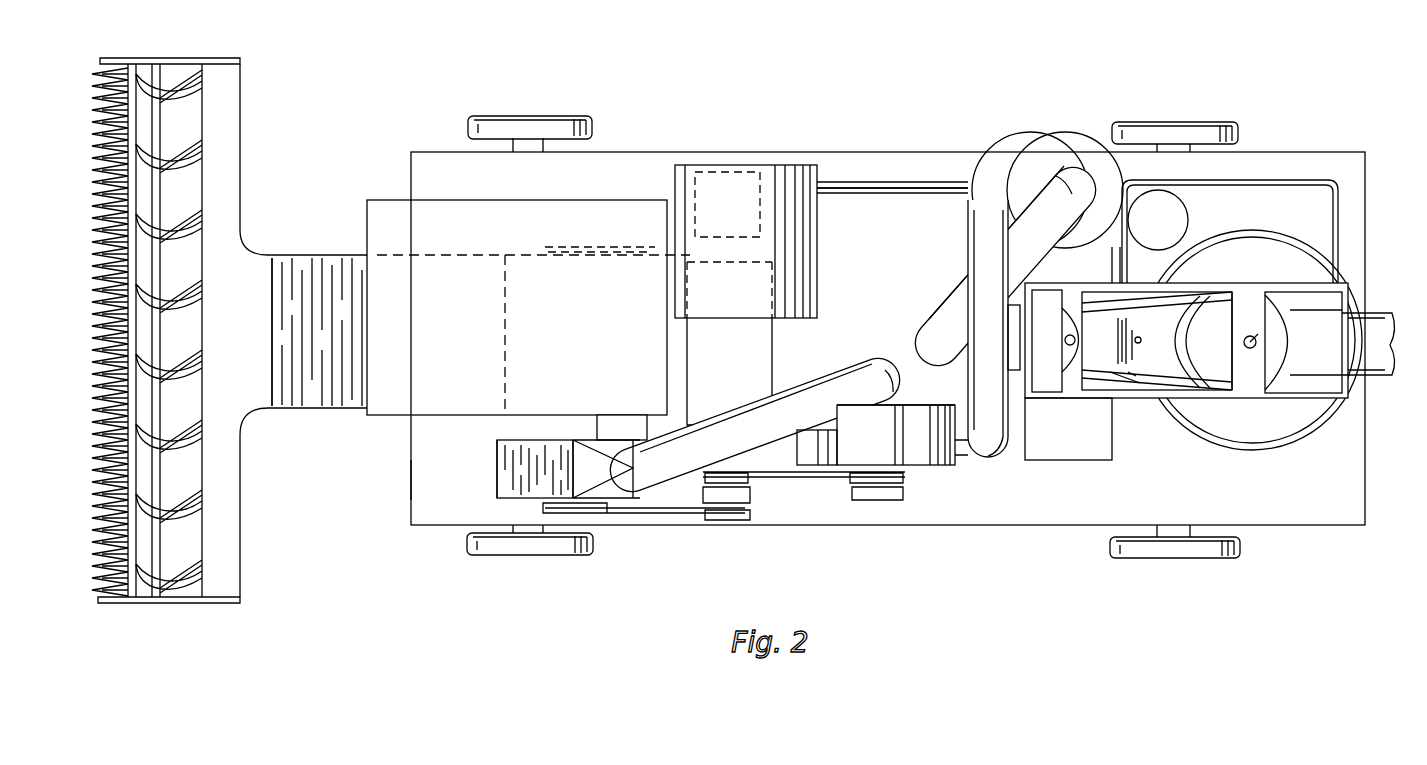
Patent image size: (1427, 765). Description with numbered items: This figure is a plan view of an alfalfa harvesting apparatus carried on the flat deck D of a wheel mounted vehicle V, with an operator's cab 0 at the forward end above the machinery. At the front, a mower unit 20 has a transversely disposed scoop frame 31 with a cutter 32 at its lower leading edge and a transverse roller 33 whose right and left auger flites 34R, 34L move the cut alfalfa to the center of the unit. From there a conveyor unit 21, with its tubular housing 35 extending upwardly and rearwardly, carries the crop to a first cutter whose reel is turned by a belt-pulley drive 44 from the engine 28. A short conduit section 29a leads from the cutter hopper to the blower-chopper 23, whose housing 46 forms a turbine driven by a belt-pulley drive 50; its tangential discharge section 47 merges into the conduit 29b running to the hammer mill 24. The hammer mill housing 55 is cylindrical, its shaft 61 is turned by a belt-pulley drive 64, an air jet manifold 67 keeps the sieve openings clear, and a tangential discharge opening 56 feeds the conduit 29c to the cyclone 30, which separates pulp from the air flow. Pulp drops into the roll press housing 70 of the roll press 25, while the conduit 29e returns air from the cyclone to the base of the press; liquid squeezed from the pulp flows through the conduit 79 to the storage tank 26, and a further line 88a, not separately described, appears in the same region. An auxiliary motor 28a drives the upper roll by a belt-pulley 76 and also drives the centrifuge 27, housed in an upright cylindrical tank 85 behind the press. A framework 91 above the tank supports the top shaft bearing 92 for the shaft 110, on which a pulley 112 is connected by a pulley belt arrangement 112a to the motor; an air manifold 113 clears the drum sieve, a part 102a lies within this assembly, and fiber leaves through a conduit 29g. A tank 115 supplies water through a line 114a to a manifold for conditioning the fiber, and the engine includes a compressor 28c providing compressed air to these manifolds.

The mower unit 20 is at (172, 64).
The conveyor unit 21 is at (330, 262).
The blower-chopper 23 is at (506, 481).
The hammer mill 24 is at (884, 476).
The roll press 25 is at (1102, 452).
The storage tank 26 is at (762, 186).
The centrifuge 27 is at (1298, 430).
The engine 28 is at (729, 343).
The auxiliary motor 28a is at (1095, 385).
The compressor 28c is at (722, 203).
The short conduit section 29a is at (624, 420).
The conduit 29b is at (762, 417).
The conduit 29c is at (996, 442).
The conduit 29e is at (975, 285).
The conduit 29g is at (1366, 318).
The cyclone 30 is at (1028, 152).
The scoop frame 31 is at (222, 518).
The cutter 32 is at (103, 317).
The transverse roller 33 is at (137, 330).
The right auger flite 34R is at (140, 238).
The left auger flite 34L is at (146, 505).
The tubular housing 35 is at (330, 406).
The belt-pulley drive 44 is at (652, 250).
The blower-chopper housing 46 is at (512, 440).
The tangential discharge section 47 is at (554, 458).
The belt-pulley drive 50 is at (650, 516).
The hammer mill housing 55 is at (940, 402).
The tangential discharge opening 56 is at (958, 460).
The shaft 61 is at (778, 492).
The belt-pulley drive 64 is at (704, 478).
The air jet manifold 67 is at (830, 445).
The roll press housing 70 is at (1114, 438).
The belt-pulley 76 is at (1136, 360).
The conduit 79 is at (908, 196).
The cylindrical tank 85 is at (1258, 234).
The air return conduit 88a is at (918, 180).
The framework 91 is at (1186, 340).
The top shaft bearing 92 is at (1226, 340).
The unloading auger trough 102a is at (1215, 387).
The shaft 110 is at (1256, 340).
The pulley 112 is at (1290, 348).
The pulley belt arrangement 112a is at (1176, 380).
The air manifold 113 is at (1141, 341).
The line 114a is at (1116, 262).
The tank 115 is at (1170, 226).
The operator's cab 0 is at (507, 212).
The vehicle V is at (422, 137).
The deck D is at (418, 470).